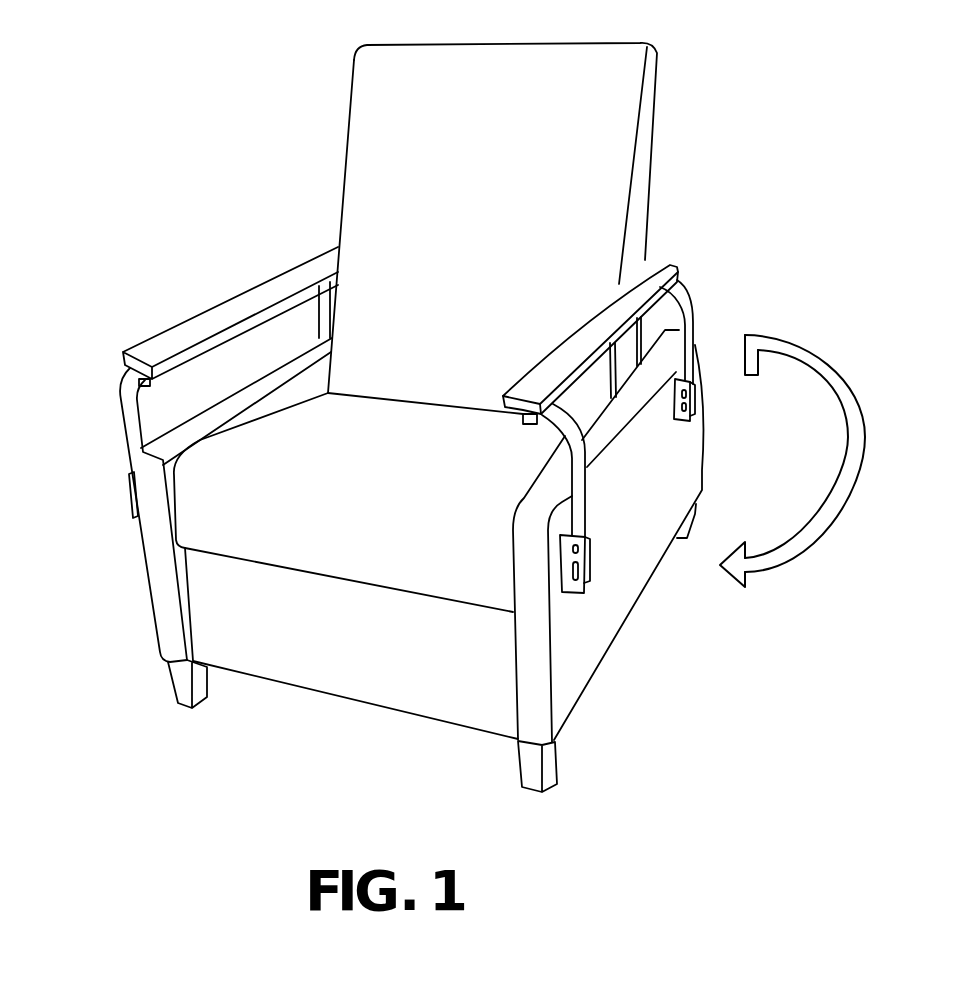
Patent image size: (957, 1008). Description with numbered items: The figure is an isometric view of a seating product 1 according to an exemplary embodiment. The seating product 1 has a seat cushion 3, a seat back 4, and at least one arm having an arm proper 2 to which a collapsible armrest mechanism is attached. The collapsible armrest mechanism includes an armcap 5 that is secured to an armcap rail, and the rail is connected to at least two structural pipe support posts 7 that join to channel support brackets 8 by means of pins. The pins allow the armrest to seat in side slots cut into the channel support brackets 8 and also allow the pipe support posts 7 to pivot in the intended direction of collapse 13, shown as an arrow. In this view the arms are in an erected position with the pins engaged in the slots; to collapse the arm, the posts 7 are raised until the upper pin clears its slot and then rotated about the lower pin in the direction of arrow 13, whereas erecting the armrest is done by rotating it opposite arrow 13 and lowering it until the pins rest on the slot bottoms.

The seating product 1 is at (868, 82).
The arm proper 2 is at (683, 483).
The seat cushion 3 is at (368, 430).
The seat back 4 is at (440, 140).
The armcap 5 is at (652, 270).
The structural pipe support post 7 is at (690, 318).
The channel support bracket 8 is at (592, 565).
The intended direction of collapse 13 is at (855, 420).